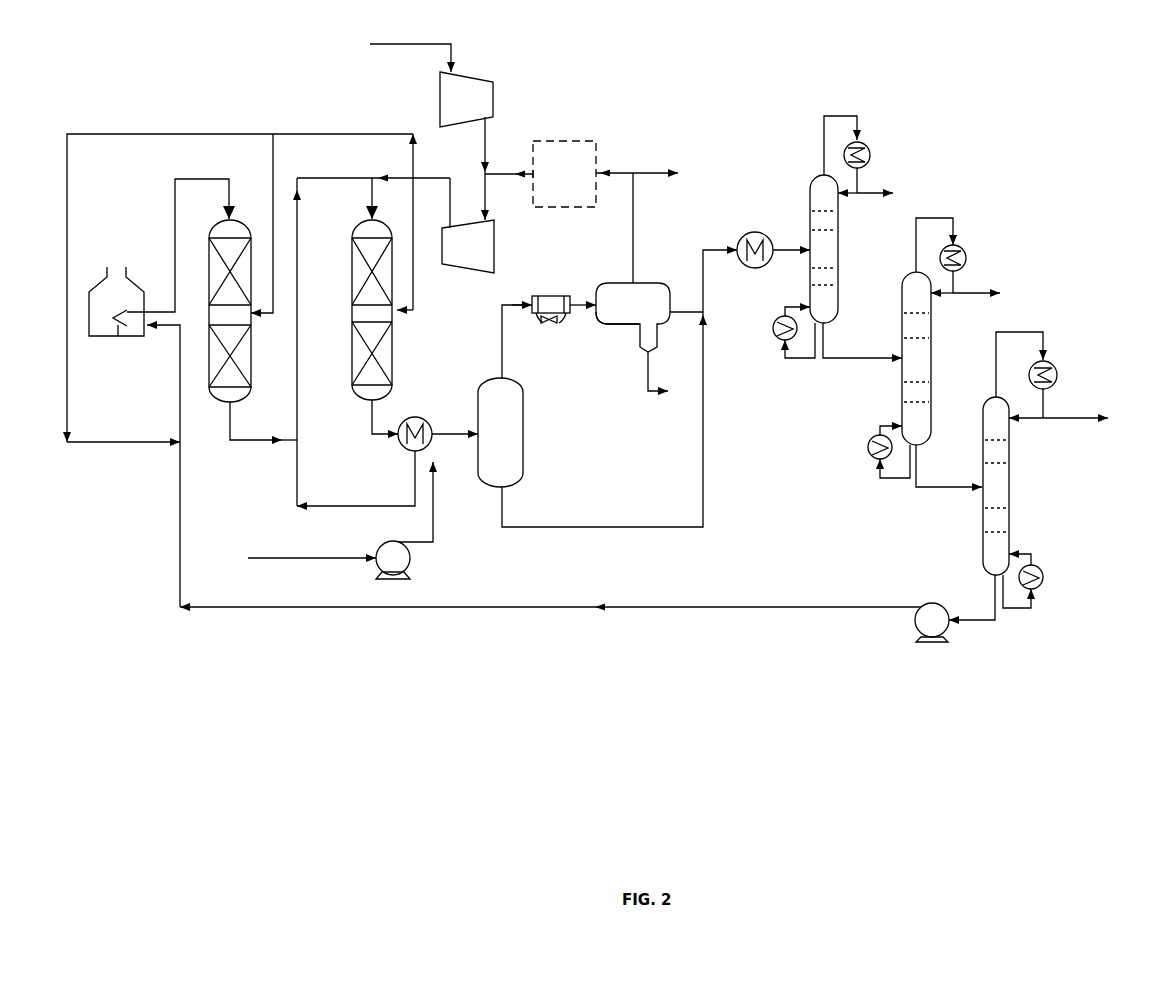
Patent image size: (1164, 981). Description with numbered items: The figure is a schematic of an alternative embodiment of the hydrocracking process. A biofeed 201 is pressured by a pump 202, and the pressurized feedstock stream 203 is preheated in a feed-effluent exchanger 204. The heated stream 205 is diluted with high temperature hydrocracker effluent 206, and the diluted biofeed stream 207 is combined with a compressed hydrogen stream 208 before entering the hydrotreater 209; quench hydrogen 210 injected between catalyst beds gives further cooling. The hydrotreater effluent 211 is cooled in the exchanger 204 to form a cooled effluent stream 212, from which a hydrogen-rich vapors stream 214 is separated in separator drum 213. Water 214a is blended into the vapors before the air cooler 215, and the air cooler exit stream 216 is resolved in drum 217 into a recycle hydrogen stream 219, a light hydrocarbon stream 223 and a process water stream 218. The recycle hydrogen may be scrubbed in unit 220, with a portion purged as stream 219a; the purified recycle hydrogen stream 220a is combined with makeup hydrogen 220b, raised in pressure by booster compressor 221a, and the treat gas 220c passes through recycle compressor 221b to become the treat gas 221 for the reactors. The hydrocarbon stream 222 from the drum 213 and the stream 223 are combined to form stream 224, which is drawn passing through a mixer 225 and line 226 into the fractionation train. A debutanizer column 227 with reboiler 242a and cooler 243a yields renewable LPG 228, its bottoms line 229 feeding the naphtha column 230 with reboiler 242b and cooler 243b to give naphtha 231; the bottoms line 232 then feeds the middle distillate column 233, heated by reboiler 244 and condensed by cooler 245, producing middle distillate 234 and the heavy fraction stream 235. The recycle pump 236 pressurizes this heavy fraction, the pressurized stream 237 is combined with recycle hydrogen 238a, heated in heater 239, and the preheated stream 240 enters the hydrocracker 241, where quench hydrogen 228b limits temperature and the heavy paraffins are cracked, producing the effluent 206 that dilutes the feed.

The biofeed 201 is at (298, 556).
The pump 202 is at (410, 550).
The pressurized feedstock stream 203 is at (437, 512).
The feed-effluent exchanger 204 is at (405, 443).
The heated stream 205 is at (370, 505).
The hydrocracker effluent 206 is at (257, 443).
The diluted biofeed stream 207 is at (300, 378).
The compressed hydrogen stream 208 is at (398, 176).
The hydrotreater 209 is at (370, 222).
The quench hydrogen 210 is at (418, 306).
The hydrotreater effluent 211 is at (392, 405).
The cooled effluent stream 212 is at (462, 430).
The separator drum 213 is at (523, 404).
The hydrogen-rich vapors stream 214 is at (500, 333).
The water 214a is at (520, 302).
The air cooler 215 is at (548, 296).
The air cooler exit stream 216 is at (592, 300).
The drum 217 is at (597, 320).
The process water stream 218 is at (650, 395).
The recycle hydrogen stream 219 is at (634, 232).
The purge stream 219a is at (652, 173).
The scrubbing unit 220 is at (596, 141).
The purified recycle hydrogen stream 220a is at (500, 173).
The makeup hydrogen 220b is at (390, 45).
The treat gas 220c is at (488, 190).
The treat gas 221 is at (425, 178).
The booster compressor 221a is at (440, 113).
The recycle compressor 221b is at (483, 275).
The hydrocarbon product stream 222 is at (545, 526).
The light hydrocarbon stream 223 is at (690, 302).
The combined stream 224 is at (706, 282).
The mixer 225 is at (748, 233).
The column feed line 226 is at (783, 258).
The debutanizer column 227 is at (805, 193).
The renewable LPG 228 is at (865, 190).
The quench hydrogen 228b is at (273, 190).
The first column bottoms line 229 is at (835, 360).
The naphtha column 230 is at (897, 292).
The naphtha 231 is at (990, 292).
The second column bottoms line 232 is at (940, 489).
The middle distillate column 233 is at (1012, 490).
The middle distillate 234 is at (1070, 416).
The heavy fraction stream 235 is at (985, 612).
The recycle pump 236 is at (918, 627).
The pressurized stream 237 is at (822, 606).
The recycle hydrogen 238a is at (152, 443).
The heater 239 is at (135, 338).
The preheated stream 240 is at (198, 178).
The hydrocracker 241 is at (220, 402).
The reboiler 242a is at (773, 330).
The reboiler 242b is at (876, 458).
The cooler 243a is at (872, 153).
The cooler 243b is at (968, 256).
The reboiler 244 is at (1045, 578).
The cooler 245 is at (1060, 372).